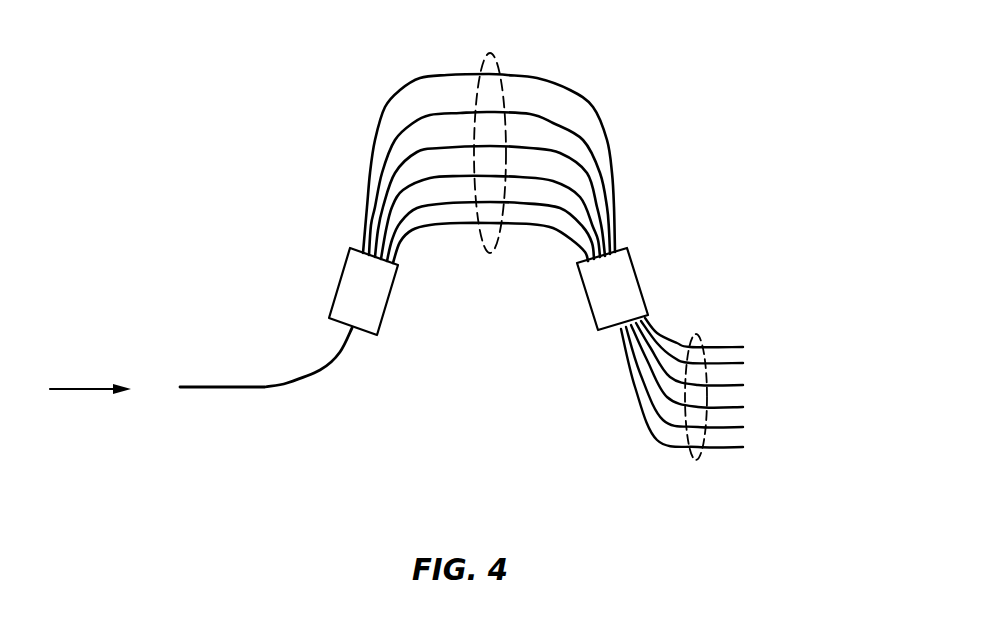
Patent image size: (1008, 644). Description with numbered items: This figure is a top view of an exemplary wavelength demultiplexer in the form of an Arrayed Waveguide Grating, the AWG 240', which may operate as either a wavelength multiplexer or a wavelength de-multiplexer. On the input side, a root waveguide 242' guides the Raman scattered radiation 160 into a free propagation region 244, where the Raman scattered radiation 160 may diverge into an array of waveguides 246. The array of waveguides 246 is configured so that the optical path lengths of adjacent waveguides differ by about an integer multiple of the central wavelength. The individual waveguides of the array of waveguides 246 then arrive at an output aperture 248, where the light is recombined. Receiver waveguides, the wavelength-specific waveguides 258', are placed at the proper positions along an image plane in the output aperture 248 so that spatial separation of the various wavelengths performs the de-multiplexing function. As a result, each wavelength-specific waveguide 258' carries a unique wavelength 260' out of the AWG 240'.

The Raman scattered radiation 160 is at (94, 388).
The Arrayed Waveguide Grating 240' is at (529, 259).
The root waveguide 242' is at (266, 349).
The free propagation region 244 is at (338, 285).
The array of waveguides 246 is at (497, 62).
The output aperture 248 is at (635, 271).
The wavelength-specific waveguides 258' is at (659, 426).
The unique wavelength 260' is at (764, 390).